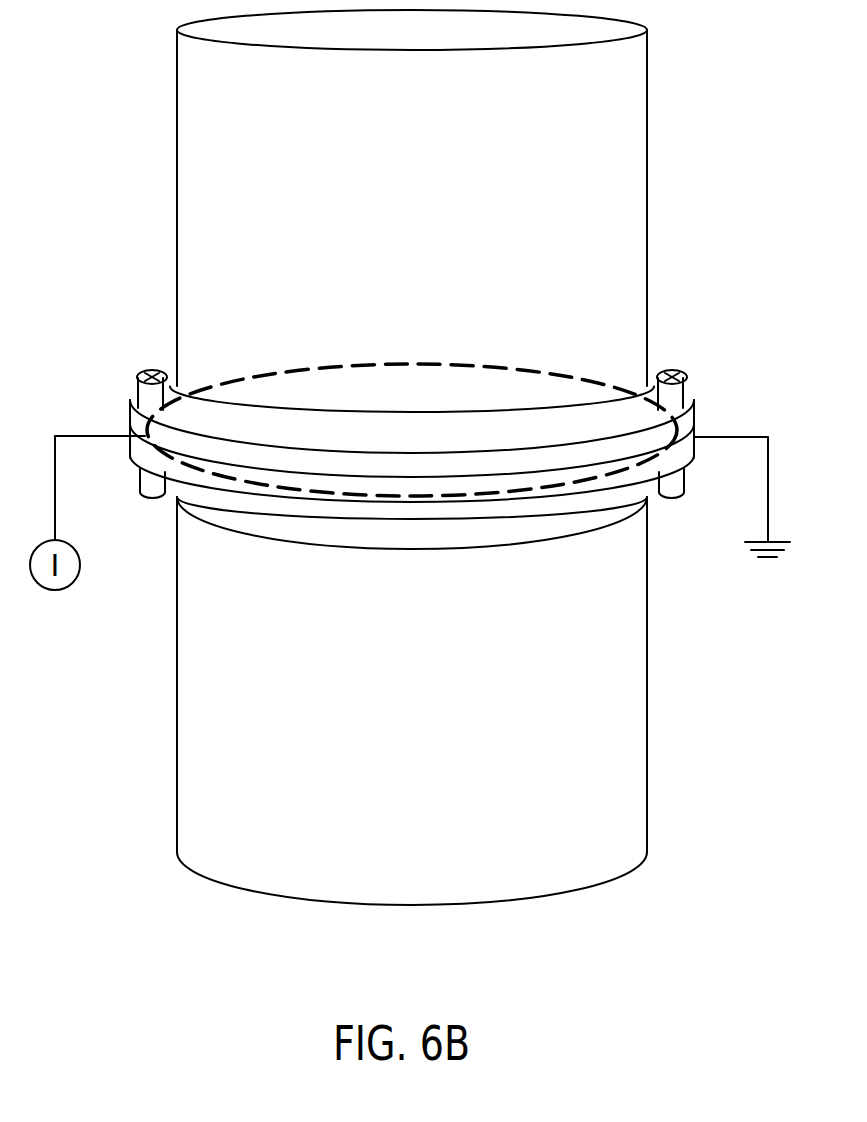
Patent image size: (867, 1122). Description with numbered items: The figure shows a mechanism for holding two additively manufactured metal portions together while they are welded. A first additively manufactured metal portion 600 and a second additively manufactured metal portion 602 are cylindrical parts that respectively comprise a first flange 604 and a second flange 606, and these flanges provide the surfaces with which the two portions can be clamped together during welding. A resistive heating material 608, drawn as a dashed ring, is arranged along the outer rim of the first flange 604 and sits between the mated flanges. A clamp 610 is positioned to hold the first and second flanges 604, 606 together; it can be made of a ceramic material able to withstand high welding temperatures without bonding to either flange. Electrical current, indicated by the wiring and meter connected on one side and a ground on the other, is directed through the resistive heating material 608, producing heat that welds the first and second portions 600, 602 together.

The first additively manufactured metal portion 600 is at (647, 665).
The second additively manufactured metal portion 602 is at (647, 201).
The first flange 604 is at (495, 535).
The second flange 606 is at (432, 437).
The resistive heating material 608 is at (348, 497).
The clamp 610 is at (693, 410).